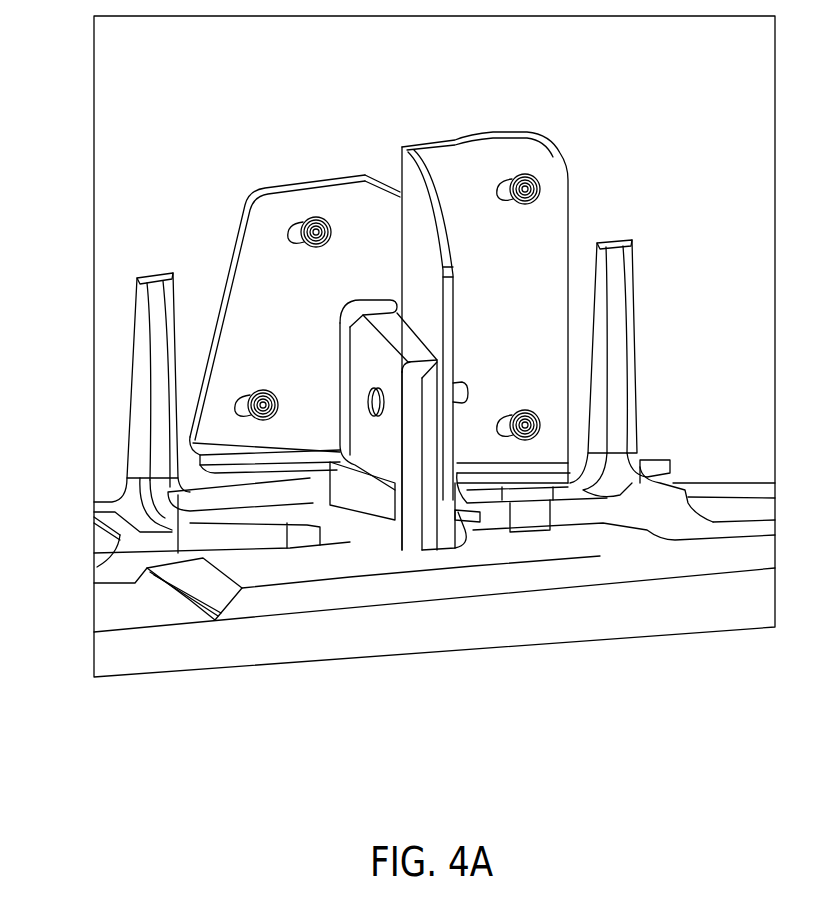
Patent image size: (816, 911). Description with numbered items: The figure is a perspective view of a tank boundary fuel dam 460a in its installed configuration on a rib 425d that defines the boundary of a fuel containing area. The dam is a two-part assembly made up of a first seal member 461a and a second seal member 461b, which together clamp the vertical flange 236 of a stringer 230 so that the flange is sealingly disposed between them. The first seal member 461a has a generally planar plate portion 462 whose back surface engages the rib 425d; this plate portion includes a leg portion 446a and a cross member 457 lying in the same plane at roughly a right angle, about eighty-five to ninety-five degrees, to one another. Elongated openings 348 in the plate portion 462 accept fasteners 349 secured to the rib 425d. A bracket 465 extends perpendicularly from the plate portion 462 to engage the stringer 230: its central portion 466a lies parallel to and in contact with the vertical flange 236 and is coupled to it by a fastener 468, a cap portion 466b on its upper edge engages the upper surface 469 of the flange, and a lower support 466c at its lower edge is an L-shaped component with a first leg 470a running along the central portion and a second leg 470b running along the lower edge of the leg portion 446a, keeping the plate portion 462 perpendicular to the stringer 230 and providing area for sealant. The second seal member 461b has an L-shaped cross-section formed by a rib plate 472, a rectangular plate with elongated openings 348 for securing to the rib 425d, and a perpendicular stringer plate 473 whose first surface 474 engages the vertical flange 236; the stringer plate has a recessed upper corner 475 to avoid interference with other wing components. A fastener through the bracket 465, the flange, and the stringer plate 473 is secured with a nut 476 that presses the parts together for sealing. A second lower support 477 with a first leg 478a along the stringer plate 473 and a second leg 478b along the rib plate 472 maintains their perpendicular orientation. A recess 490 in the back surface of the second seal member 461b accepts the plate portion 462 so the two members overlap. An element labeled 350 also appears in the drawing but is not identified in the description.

The stringer 230 is at (253, 603).
The vertical flange 236 is at (412, 525).
The openings 348 is at (290, 222).
The fasteners 349 is at (305, 220).
The washer 350 is at (545, 175).
The rib 425d is at (695, 75).
The leg portion 446a is at (235, 365).
The cross member 457 is at (363, 250).
The tank boundary fuel dam 460a is at (397, 165).
The first seal member 461a is at (239, 224).
The second seal member 461b is at (501, 132).
The plate portion 462 is at (388, 219).
The bracket 465 is at (430, 500).
The central portion 466a is at (377, 453).
The cap portion 466b is at (405, 345).
The lower support 466c is at (353, 487).
The fastener 468 is at (343, 388).
The upper surface 469 is at (468, 385).
The first leg 470a is at (374, 525).
The second leg 470b is at (200, 473).
The rib plate 472 is at (540, 244).
The stringer plate 473 is at (440, 292).
The first surface 474 is at (362, 178).
The recessed upper corner 475 is at (420, 212).
The nut 476 is at (560, 347).
The lower support 477 is at (477, 534).
The first leg 478a is at (470, 500).
The second leg 478b is at (603, 523).
The recess 490 is at (447, 200).